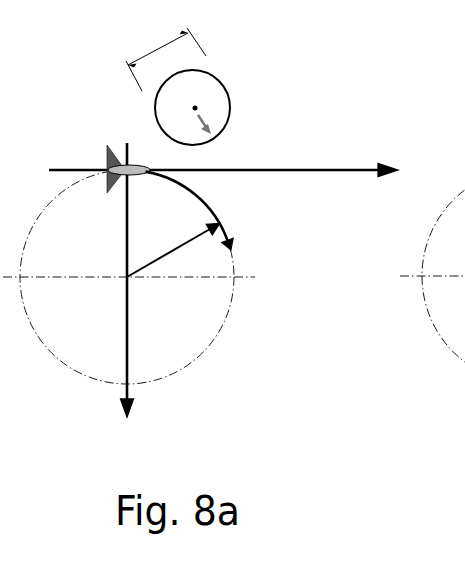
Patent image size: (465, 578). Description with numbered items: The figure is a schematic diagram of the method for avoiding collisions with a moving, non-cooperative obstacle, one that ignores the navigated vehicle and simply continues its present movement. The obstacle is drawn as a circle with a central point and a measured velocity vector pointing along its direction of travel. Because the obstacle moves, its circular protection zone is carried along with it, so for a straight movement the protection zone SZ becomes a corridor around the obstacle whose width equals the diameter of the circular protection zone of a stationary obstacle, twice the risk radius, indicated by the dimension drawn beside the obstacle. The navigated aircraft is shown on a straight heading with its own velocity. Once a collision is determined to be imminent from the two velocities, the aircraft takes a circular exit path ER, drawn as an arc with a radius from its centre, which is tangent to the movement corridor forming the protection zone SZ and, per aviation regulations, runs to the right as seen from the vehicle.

The circular exit path ER is at (180, 187).
The protection zone SZ is at (328, 216).